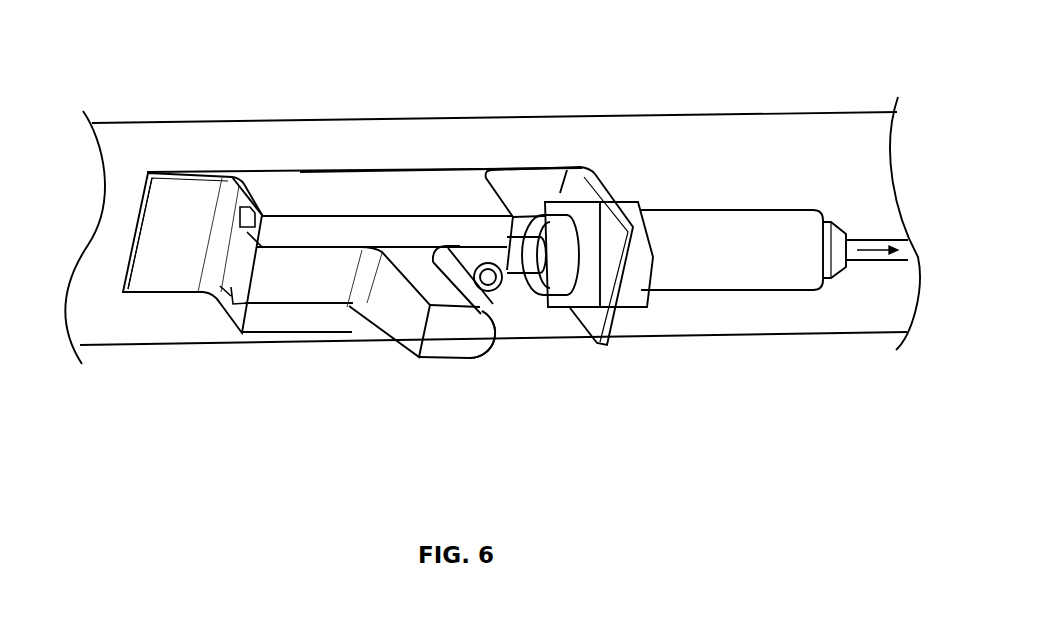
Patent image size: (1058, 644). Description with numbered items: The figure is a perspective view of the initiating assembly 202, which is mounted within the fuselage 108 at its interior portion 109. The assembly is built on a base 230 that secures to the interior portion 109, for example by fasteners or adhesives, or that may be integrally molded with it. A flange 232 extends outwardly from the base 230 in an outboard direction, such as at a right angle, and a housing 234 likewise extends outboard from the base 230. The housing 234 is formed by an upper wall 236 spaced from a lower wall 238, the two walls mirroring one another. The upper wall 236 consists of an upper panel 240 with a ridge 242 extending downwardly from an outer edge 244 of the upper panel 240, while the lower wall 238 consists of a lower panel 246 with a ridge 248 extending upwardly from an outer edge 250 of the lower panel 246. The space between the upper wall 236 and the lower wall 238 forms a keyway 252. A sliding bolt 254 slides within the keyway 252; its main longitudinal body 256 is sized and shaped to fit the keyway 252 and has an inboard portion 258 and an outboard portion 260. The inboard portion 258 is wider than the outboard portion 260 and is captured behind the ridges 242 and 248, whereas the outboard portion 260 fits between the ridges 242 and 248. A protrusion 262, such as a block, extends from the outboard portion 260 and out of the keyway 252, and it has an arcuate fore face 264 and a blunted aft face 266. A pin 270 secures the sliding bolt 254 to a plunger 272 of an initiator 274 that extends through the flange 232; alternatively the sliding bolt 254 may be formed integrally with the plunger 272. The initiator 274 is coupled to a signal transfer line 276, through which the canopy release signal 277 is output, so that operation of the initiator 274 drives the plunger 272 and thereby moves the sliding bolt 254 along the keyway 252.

The fuselage 108 is at (143, 135).
The interior portion 109 is at (304, 133).
The initiating assembly 202 is at (718, 205).
The base 230 is at (182, 138).
The flange 232 is at (603, 188).
The housing 234 is at (378, 198).
The upper wall 236 is at (442, 197).
The lower wall 238 is at (313, 333).
The upper panel 240 is at (312, 188).
The ridge 242 is at (253, 223).
The outer edge 244 is at (514, 170).
The lower panel 246 is at (230, 322).
The ridge 248 is at (246, 302).
The outer edge 250 is at (267, 322).
The keyway 252 is at (237, 269).
The sliding bolt 254 is at (487, 342).
The main longitudinal body 256 is at (364, 318).
The inboard portion 258 is at (250, 205).
The outboard portion 260 is at (302, 262).
The protrusion 262 is at (488, 284).
The arcuate fore face 264 is at (532, 262).
The blunted aft face 266 is at (410, 358).
The pin 270 is at (463, 359).
The plunger 272 is at (498, 318).
The initiator 274 is at (748, 225).
The signal transfer line 276 is at (871, 258).
The canopy release signal 277 is at (876, 244).